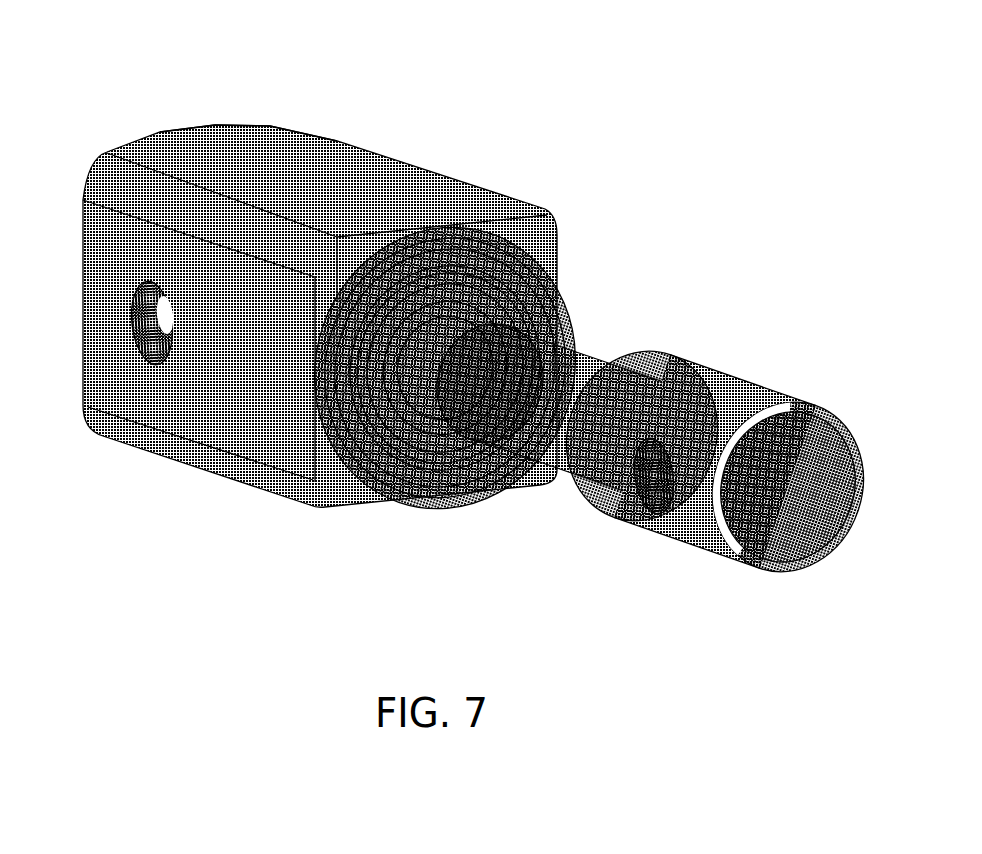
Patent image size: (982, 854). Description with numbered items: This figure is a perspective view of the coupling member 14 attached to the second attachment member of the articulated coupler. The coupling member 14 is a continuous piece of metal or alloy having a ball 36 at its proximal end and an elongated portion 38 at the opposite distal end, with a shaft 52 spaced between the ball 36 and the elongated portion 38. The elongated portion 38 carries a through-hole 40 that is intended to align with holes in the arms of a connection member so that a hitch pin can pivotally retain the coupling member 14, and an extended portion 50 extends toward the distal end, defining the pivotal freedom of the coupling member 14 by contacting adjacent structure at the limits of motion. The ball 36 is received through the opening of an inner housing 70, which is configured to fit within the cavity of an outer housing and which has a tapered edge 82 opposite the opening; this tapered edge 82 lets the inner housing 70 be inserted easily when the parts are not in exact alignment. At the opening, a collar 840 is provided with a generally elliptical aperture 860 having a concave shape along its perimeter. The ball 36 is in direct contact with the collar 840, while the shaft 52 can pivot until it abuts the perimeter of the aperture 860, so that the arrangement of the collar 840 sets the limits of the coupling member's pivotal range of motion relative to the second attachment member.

The coupling member 14 is at (518, 310).
The ball 36 is at (460, 322).
The elongated portion 38 is at (710, 410).
The through-hole 40 is at (658, 492).
The extended portion 50 is at (810, 452).
The shaft 52 is at (533, 352).
The inner housing 70 is at (402, 175).
The tapered edge 82 is at (177, 132).
The collar 840 is at (488, 273).
The aperture 860 is at (418, 427).